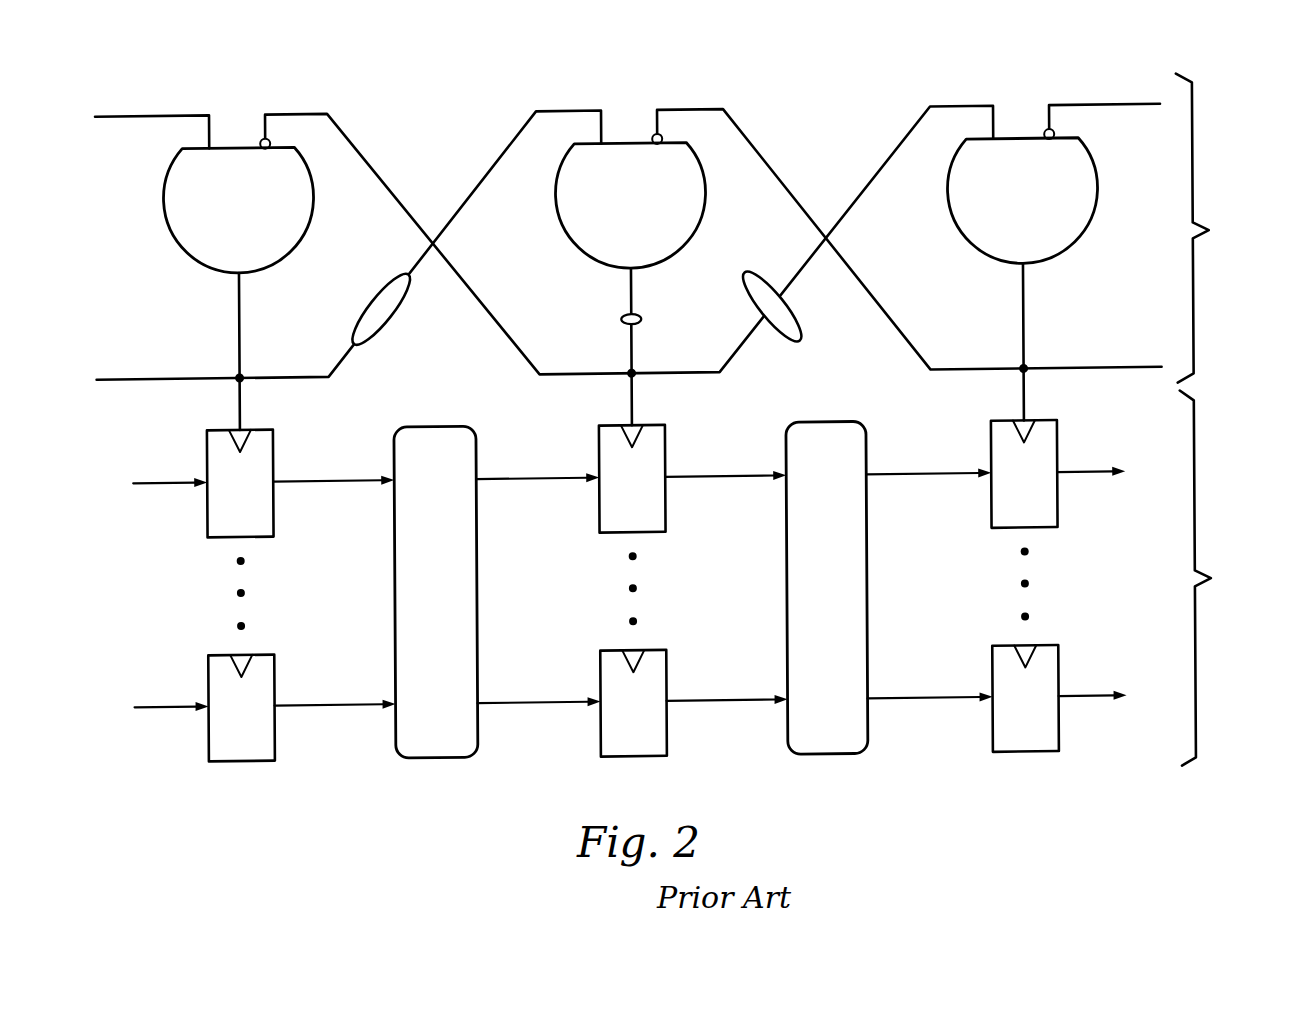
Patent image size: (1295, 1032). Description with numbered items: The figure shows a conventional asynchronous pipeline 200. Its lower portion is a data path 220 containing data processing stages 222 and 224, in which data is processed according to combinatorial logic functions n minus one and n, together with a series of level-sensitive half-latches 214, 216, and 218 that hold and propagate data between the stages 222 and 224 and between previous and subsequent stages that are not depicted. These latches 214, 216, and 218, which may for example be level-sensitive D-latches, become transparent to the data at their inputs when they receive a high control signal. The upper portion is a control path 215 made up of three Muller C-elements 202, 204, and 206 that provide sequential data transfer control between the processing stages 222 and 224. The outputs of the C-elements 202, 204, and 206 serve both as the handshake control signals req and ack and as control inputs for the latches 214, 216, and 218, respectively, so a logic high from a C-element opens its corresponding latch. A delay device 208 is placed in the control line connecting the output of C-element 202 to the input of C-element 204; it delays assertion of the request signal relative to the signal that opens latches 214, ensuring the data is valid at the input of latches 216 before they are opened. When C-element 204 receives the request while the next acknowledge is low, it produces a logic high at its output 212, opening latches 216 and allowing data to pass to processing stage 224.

The asynchronous pipeline 200 is at (850, 64).
The Muller C-element 202 is at (192, 249).
The Muller C-element 204 is at (584, 249).
The Muller C-element 206 is at (976, 250).
The delay device 208 is at (368, 303).
The output 212 is at (643, 320).
The level-sensitive half-latches 214 is at (273, 448).
The control path 215 is at (1222, 227).
The level-sensitive half-latches 216 is at (665, 447).
The level-sensitive half-latches 218 is at (1057, 444).
The data path 220 is at (1226, 577).
The data processing stage 222 is at (441, 424).
The data processing stage 224 is at (828, 424).